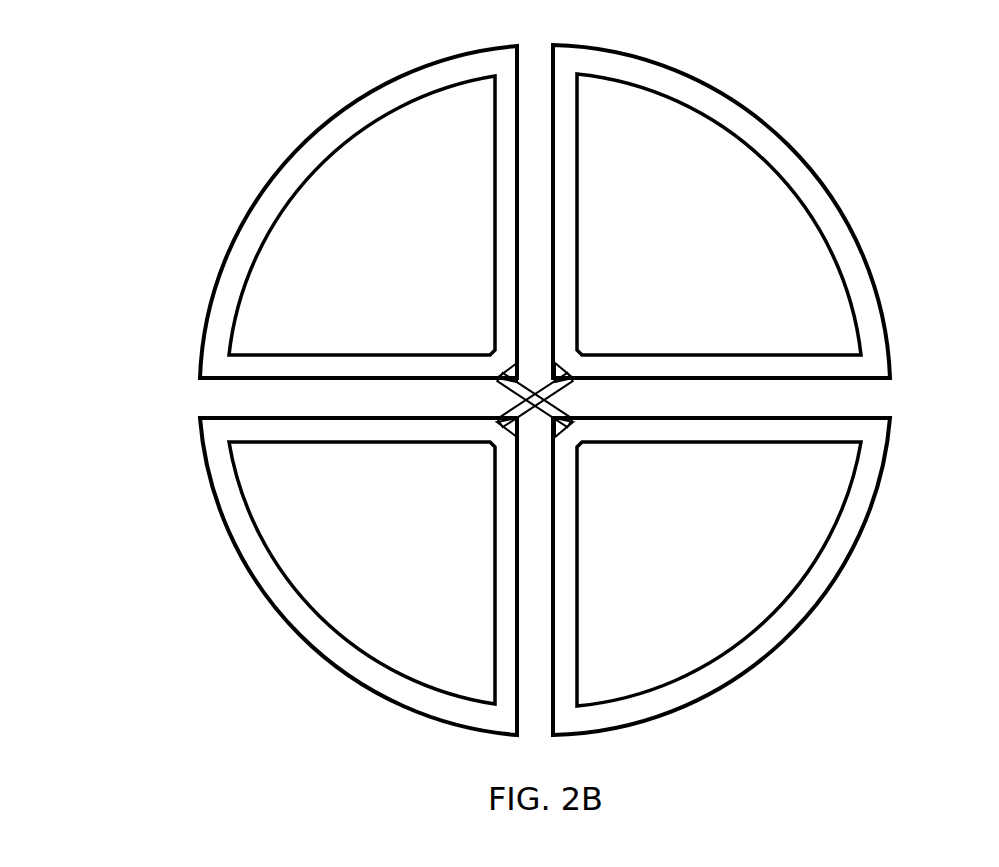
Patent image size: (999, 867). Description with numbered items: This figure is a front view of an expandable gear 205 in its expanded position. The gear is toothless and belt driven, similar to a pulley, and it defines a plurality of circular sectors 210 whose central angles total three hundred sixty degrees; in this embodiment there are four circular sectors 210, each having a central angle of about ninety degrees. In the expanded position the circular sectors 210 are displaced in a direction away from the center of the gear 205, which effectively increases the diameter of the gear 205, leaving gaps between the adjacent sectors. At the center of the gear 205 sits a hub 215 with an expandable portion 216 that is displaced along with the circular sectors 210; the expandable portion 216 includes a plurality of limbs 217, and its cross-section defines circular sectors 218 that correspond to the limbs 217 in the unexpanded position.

The gear 205 is at (535, 385).
The circular sectors 210 is at (410, 455).
The horizontal gap 215 is at (579, 402).
The vertical gap 216 is at (753, 390).
The center cross connection 217 is at (526, 377).
The connection tab 218 is at (556, 420).